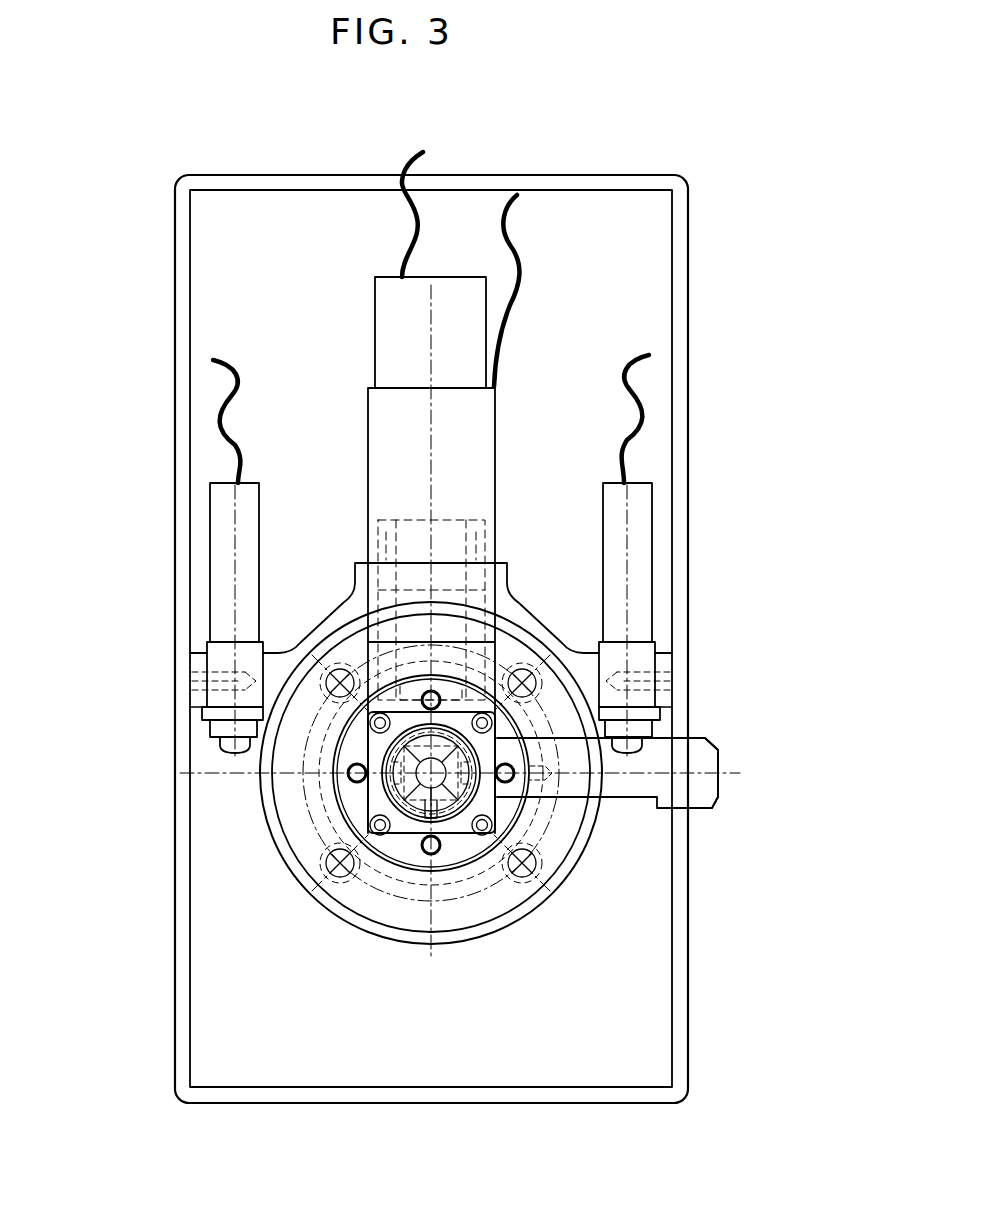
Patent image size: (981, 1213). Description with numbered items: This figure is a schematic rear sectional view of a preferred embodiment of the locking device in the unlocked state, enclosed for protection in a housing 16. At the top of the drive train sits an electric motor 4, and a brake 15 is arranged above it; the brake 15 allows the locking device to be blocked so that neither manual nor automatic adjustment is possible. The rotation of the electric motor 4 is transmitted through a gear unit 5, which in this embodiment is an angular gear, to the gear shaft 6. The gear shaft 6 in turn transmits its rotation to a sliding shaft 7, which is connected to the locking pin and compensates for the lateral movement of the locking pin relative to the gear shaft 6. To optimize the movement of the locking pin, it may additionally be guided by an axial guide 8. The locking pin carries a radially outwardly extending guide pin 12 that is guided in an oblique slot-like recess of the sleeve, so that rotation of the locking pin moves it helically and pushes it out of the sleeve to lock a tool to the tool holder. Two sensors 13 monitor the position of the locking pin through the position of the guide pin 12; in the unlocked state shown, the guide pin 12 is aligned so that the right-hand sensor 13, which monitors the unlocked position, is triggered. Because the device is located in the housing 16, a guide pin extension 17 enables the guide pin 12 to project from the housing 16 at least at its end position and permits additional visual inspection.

The electric motor 4 is at (453, 393).
The gear unit 5 is at (459, 647).
The gear shaft 6 is at (385, 833).
The sliding shaft 7 is at (424, 805).
The axial guide 8 is at (458, 810).
The guide pin 12 is at (623, 792).
The sensors 13 is at (222, 487).
The brake 15 is at (448, 295).
The housing 16 is at (182, 1003).
The guide pin extension 17 is at (705, 795).